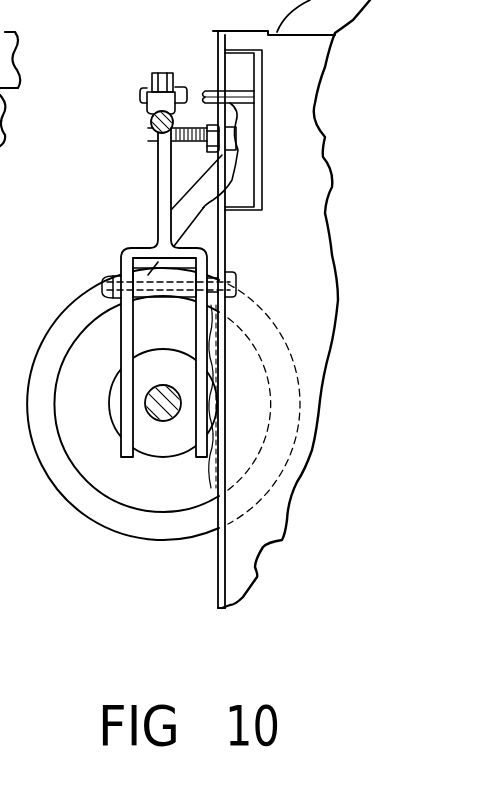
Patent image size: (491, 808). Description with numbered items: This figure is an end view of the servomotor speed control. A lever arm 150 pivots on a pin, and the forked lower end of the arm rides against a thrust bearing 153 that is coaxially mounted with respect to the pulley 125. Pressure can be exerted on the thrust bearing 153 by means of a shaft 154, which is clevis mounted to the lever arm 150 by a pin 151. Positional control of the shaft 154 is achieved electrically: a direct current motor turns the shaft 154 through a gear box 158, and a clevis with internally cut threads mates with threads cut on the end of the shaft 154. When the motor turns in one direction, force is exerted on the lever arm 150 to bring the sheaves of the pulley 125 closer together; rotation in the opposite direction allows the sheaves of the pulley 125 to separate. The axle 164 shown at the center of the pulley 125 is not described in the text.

The pulley 125 is at (65, 500).
The lever arm 150 is at (130, 245).
The pin 151 is at (140, 96).
The thrust bearing 153 is at (186, 458).
The shaft 154 is at (151, 124).
The gear box 158 is at (0, 168).
The axle 164 is at (146, 388).